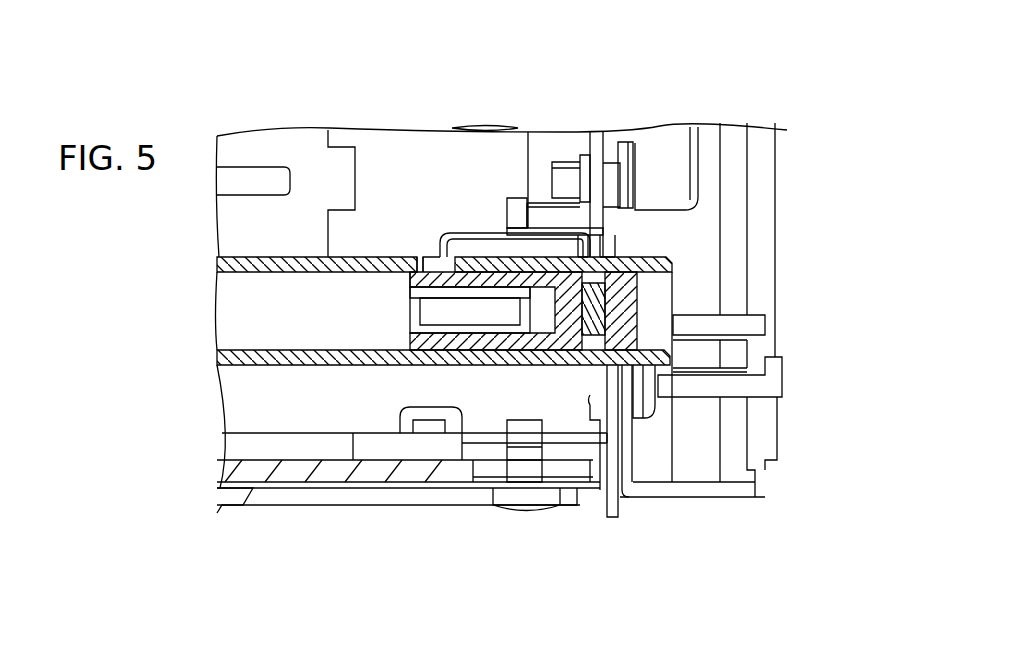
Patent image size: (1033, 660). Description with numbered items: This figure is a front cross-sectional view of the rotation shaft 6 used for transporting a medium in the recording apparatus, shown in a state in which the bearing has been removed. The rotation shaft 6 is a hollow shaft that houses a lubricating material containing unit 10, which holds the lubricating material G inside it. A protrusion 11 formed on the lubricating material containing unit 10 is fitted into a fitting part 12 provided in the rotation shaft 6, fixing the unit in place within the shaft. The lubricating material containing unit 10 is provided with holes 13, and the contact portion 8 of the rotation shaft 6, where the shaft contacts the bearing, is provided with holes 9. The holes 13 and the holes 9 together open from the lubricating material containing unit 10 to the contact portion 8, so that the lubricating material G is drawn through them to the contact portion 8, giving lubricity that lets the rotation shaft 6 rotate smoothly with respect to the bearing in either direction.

The rotation shaft 6 is at (373, 366).
The contact portion 8 is at (587, 262).
The holes 9 is at (607, 258).
The lubricating material containing unit 10 is at (493, 340).
The protrusion 11 is at (440, 252).
The fitting part 12 is at (427, 258).
The holes 13 is at (612, 258).
The lubricating material G is at (640, 385).